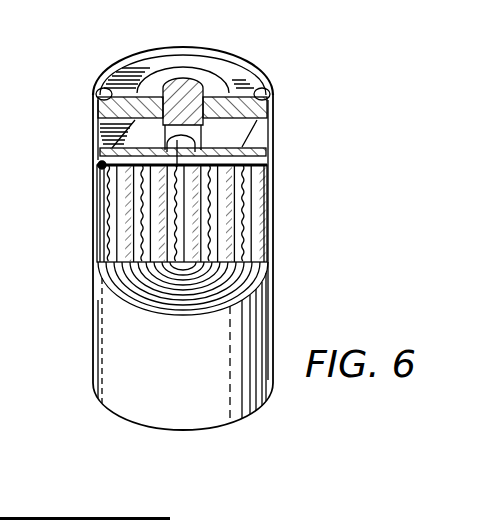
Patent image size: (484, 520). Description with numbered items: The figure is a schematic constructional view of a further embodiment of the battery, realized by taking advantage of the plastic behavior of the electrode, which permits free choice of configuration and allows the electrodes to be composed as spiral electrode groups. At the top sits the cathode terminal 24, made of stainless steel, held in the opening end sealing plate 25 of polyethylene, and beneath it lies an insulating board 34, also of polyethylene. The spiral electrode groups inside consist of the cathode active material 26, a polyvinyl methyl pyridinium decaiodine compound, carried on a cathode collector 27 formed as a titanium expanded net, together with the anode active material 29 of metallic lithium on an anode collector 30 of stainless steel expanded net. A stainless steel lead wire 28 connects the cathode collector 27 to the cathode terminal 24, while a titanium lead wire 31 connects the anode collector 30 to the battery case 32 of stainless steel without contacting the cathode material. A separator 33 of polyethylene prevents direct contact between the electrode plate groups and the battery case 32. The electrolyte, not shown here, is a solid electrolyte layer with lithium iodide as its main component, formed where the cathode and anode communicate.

The cathode terminal 24 is at (180, 78).
The opening end sealing plate 25 is at (142, 68).
The cathode active material 26 is at (268, 218).
The cathode collector 27 is at (268, 190).
The stainless steel lead wire 28 is at (193, 144).
The anode active material 29 is at (102, 232).
The anode collector 30 is at (102, 195).
The titanium lead wire 31 is at (100, 164).
The battery case 32 is at (272, 250).
The separator 33 is at (98, 257).
The insulating board 34 is at (113, 143).